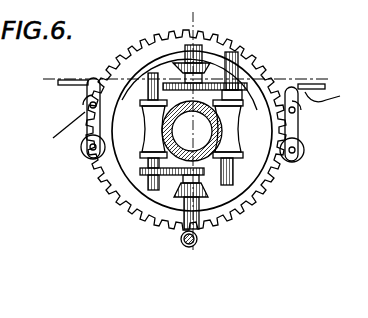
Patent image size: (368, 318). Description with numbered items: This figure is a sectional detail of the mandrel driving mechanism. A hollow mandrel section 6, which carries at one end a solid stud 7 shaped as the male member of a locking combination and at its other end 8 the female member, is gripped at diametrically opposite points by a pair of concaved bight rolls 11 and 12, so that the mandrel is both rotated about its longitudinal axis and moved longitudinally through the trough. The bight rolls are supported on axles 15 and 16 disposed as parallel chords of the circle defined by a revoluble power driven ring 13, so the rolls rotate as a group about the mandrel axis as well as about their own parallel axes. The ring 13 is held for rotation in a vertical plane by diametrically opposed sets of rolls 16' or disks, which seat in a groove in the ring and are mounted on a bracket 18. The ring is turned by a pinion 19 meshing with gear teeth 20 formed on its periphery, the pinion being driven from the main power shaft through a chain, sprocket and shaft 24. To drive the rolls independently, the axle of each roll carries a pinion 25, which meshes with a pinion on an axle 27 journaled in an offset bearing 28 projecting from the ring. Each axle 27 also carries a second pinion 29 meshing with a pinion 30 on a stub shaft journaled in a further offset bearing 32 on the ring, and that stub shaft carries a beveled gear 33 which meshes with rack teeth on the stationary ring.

The mandrel section 6 is at (158, 124).
The stud 7 is at (211, 15).
The end of mandrel 8 is at (50, 88).
The concaved bight roll 11 is at (107, 160).
The concaved bight roll 12 is at (277, 168).
The revoluble power driven ring 13 is at (185, 68).
The axle 15 is at (116, 69).
The axle 16 is at (161, 146).
The rolls 16' is at (307, 123).
The bracket 18 is at (333, 96).
The pinion 19 is at (207, 231).
The gear teeth 20 is at (248, 70).
The shaft 24 is at (212, 246).
The pinion 25 is at (117, 166).
The axle 27 is at (192, 131).
The offset bearing 28 is at (222, 74).
The second pinion 29 is at (260, 75).
The pinion 30 is at (186, 17).
The offset bearing 32 is at (201, 44).
The beveled gear 33 is at (207, 46).